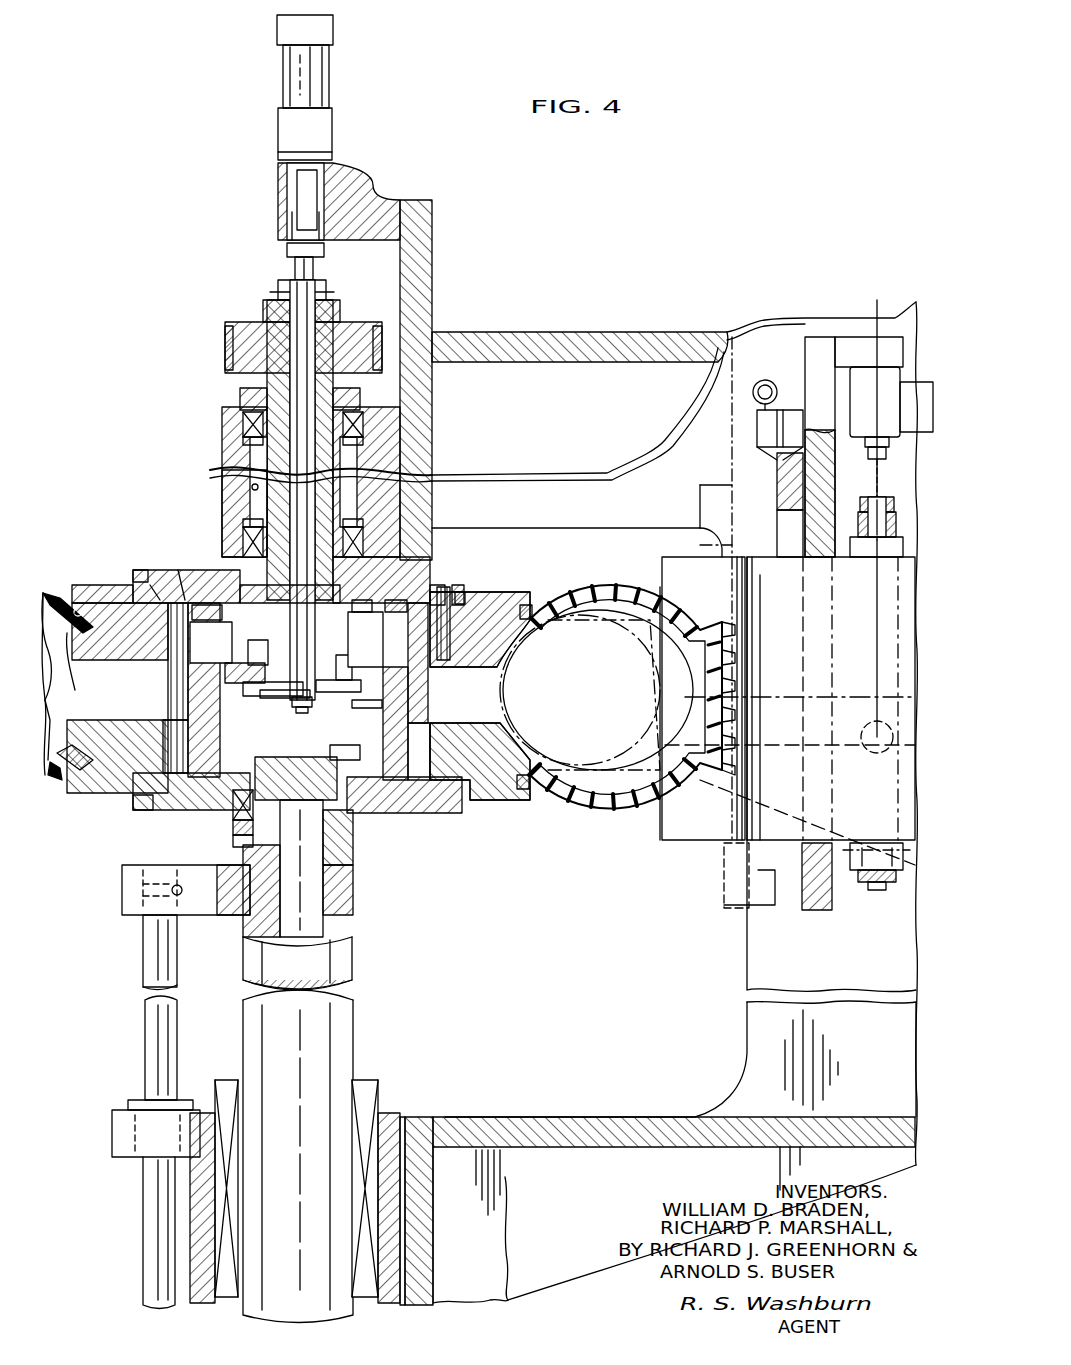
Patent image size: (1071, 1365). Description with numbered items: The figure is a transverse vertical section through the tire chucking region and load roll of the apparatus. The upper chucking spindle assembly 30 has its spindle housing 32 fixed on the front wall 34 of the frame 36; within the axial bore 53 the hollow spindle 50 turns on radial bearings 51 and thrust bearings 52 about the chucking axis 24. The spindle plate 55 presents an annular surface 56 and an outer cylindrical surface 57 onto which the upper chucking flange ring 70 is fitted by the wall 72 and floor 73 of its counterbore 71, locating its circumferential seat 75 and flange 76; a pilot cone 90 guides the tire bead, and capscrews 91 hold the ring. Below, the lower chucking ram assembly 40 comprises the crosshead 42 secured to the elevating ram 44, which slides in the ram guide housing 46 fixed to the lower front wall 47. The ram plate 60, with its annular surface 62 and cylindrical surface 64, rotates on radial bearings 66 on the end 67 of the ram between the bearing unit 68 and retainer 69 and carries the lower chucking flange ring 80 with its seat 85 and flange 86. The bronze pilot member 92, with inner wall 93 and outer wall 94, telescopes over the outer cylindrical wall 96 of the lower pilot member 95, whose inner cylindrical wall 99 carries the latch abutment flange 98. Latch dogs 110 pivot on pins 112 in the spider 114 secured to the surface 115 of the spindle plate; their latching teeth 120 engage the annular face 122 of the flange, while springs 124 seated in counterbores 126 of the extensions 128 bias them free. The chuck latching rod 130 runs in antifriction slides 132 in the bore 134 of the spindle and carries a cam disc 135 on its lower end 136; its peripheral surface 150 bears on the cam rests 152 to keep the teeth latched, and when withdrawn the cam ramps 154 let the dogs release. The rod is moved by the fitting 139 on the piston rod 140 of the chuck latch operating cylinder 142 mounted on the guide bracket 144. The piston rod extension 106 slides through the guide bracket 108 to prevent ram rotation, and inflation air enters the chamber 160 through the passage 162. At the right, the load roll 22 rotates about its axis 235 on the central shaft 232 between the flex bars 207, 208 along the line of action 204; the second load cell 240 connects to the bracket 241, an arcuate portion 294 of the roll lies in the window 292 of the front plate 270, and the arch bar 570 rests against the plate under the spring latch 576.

The load roll 22 is at (740, 836).
The first axis 24 is at (300, 908).
The upper chucking spindle assembly 30 is at (164, 371).
The spindle housing 32 is at (232, 472).
The front wall 34 is at (418, 248).
The frame 36 is at (592, 318).
The lower chucking ram assembly 40 is at (112, 948).
The crosshead 42 is at (353, 893).
The elevating ram 44 is at (355, 1044).
The ram guide housing 46 is at (405, 1125).
The lower front wall 47 is at (425, 1256).
The hollow spindle 50 is at (255, 505).
The radial bearings 51 is at (243, 425).
The thrust bearings 52 is at (243, 441).
The axial bore 53 is at (251, 487).
The spindle plate 55 is at (162, 590).
The annular surface 56 is at (182, 598).
The outer cylindrical surface 57 is at (133, 580).
The ram plate 60 is at (165, 815).
The annular surface 62 is at (158, 800).
The outer cylindrical surface 64 is at (138, 795).
The radial bearings 66 is at (360, 812).
The end 67 is at (353, 858).
The bearing unit 68 is at (253, 800).
The retainer 69 is at (372, 770).
The upper chucking flange ring 70 is at (88, 600).
The counterbore 71 is at (145, 575).
The wall 72 is at (463, 600).
The floor 73 is at (452, 590).
The circumferential seat 75 is at (85, 630).
The flange 76 is at (59, 646).
The lower chucking flange ring 80 is at (498, 795).
The seat 85 is at (88, 755).
The flange 86 is at (60, 762).
The pilot cone 90 is at (95, 635).
The capscrew 91 is at (450, 625).
The pilot member 92 is at (424, 704).
The inner wall 93 is at (195, 722).
The outer wall 94 is at (168, 692).
The lower pilot member 95 is at (405, 748).
The outer cylindrical wall 96 is at (185, 718).
The latch abutment flange 98 is at (375, 672).
The inner cylindrical wall 99 is at (386, 708).
The piston rod extension 106 is at (148, 1034).
The guide bracket 108 is at (120, 1140).
The latch dogs 110 is at (245, 658).
The pins 112 is at (246, 600).
The latch mounting spider 114 is at (360, 604).
The surface 115 is at (392, 604).
The latching tooth 120 is at (240, 698).
The annular face 122 is at (388, 664).
The springs 124 is at (453, 590).
The counterbores 126 is at (434, 585).
The extensions 128 is at (200, 613).
The chuck latching rod 130 is at (295, 268).
The linear antifriction slides 132 is at (324, 328).
The bore 134 is at (312, 400).
The cam disc 135 is at (322, 698).
The lower end 136 is at (300, 714).
The fitting 139 is at (288, 248).
The piston rod 140 is at (310, 180).
The chuck latch operating cylinder 142 is at (330, 80).
The guide bracket 144 is at (330, 190).
The peripheral surface 150 is at (335, 690).
The cam rest 152 is at (258, 688).
The cam ramp 154 is at (247, 645).
The chamber 160 is at (651, 663).
The passage 162 is at (283, 950).
The direction line of action 204 is at (772, 697).
The flex bar 207 is at (905, 545).
The flex bar 208 is at (897, 886).
The central shaft 232 is at (848, 855).
The rotation axis 235 is at (860, 395).
The second load cell 240 is at (888, 390).
The bracket 241 is at (872, 395).
The front plate 270 is at (818, 376).
The window 292 is at (795, 545).
The arcuate portion 294 is at (740, 580).
The arch bar 570 is at (785, 485).
The spring latch 576 is at (757, 435).